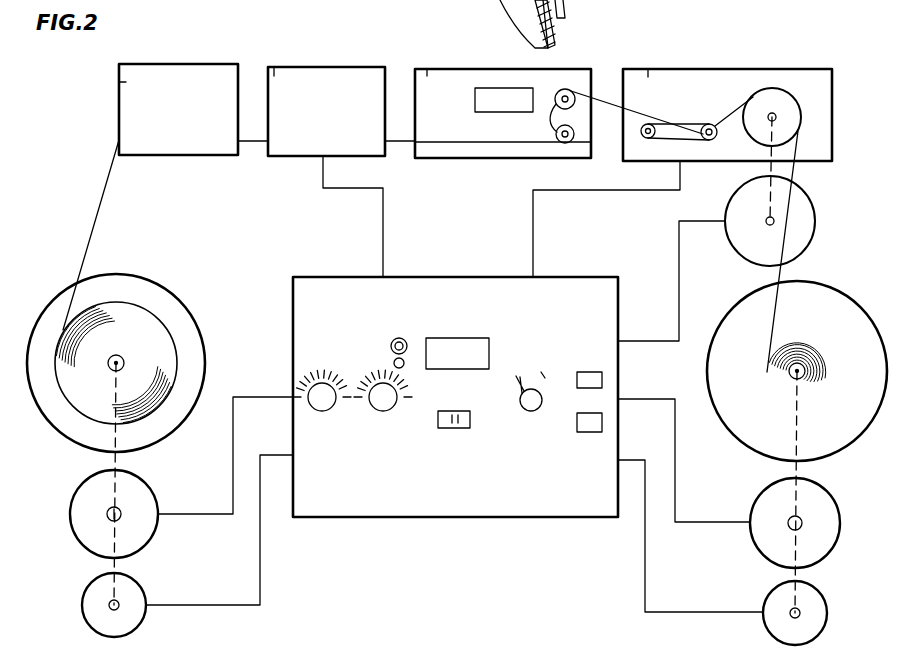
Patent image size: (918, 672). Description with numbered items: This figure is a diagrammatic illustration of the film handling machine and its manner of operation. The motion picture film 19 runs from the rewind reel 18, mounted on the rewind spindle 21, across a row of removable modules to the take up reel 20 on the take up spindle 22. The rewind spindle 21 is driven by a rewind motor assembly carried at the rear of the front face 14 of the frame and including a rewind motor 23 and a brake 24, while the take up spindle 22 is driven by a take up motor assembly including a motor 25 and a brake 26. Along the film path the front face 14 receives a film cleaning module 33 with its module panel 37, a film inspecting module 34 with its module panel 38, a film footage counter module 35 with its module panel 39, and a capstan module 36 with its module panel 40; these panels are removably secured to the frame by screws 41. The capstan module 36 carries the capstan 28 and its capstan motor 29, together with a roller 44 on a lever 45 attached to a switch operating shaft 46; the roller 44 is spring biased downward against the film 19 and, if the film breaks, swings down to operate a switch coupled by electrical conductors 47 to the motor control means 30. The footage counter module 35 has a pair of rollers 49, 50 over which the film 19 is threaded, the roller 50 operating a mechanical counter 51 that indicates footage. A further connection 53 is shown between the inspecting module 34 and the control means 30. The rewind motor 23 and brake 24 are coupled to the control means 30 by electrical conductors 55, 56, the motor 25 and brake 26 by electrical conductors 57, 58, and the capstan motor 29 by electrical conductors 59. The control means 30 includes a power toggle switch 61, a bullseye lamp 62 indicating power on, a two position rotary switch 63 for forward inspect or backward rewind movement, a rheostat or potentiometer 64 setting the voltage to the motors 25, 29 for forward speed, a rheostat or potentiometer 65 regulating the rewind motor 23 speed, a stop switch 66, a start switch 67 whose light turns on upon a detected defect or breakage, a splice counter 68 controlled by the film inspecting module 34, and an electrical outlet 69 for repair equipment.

The front face 14 is at (553, 40).
The screws 41 is at (565, 14).
The rewind reel 18 is at (56, 298).
The motion picture film 19 is at (247, 150).
The take up reel 20 is at (850, 311).
The rewind spindle 21 is at (121, 357).
The take up spindle 22 is at (802, 375).
The rewind motor 23 is at (72, 511).
The brake 24 is at (83, 607).
The motor 25 is at (830, 512).
The brake 26 is at (818, 609).
The capstan 28 is at (791, 103).
The capstan motor 29 is at (811, 225).
The motor control means 30 is at (455, 519).
The film cleaning module 33 is at (186, 66).
The film inspecting module 34 is at (334, 68).
The film footage counter module 35 is at (441, 69).
The capstan module 36 is at (767, 71).
The module panel 37 is at (124, 82).
The module panel 38 is at (277, 76).
The module panel 39 is at (427, 76).
The module panel 40 is at (648, 77).
The roller 44 is at (712, 124).
The lever 45 is at (688, 124).
The switch operating shaft 46 is at (649, 138).
The electrical conductors 47 is at (575, 193).
The roller 49 is at (556, 141).
The roller 50 is at (572, 90).
The mechanical counter 51 is at (497, 95).
The connecting line 53 is at (383, 207).
The electrical conductors 55 is at (233, 450).
The electrical conductors 56 is at (260, 555).
The electrical conductors 57 is at (676, 476).
The electrical conductors 58 is at (645, 565).
The electrical conductors 59 is at (679, 250).
The power toggle switch 61 is at (402, 338).
The bullseye lamp 62 is at (394, 360).
The two position rotary switch 63 is at (526, 408).
The rheostat or potentiometer 64 is at (318, 410).
The rheostat or potentiometer 65 is at (380, 410).
The stop switch 66 is at (591, 372).
The start switch 67 is at (586, 430).
The splice counter 68 is at (461, 345).
The electrical outlet 69 is at (443, 428).